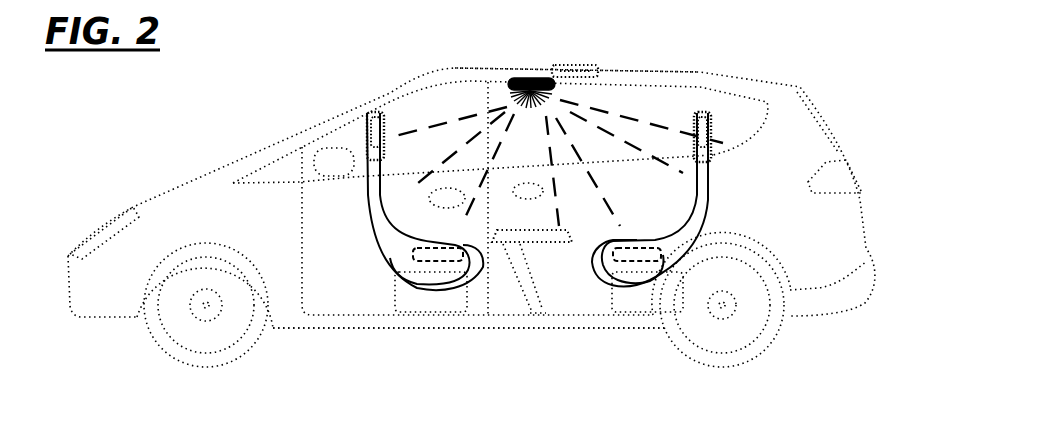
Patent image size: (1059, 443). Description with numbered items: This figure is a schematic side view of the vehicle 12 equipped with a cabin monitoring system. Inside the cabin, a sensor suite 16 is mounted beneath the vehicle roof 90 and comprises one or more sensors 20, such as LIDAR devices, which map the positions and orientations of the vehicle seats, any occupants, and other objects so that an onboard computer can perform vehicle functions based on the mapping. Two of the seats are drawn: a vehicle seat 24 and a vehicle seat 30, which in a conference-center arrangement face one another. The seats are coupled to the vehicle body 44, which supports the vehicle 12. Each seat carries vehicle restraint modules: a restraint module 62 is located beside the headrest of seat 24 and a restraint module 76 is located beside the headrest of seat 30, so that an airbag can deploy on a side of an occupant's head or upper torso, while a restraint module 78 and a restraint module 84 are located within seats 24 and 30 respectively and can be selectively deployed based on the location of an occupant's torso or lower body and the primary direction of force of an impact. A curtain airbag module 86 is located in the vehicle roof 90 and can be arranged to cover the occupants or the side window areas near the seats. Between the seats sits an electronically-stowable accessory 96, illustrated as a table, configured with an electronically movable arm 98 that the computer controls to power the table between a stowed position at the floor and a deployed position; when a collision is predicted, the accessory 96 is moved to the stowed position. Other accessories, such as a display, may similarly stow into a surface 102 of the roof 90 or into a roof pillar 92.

The vehicle 12 is at (153, 178).
The sensor suite 16 is at (509, 62).
The sensor 20 is at (508, 82).
The vehicle seat 24 is at (357, 208).
The vehicle seat 30 is at (722, 216).
The vehicle body 44 is at (447, 330).
The vehicle restraint module 62 is at (377, 112).
The vehicle restraint module 76 is at (706, 112).
The vehicle restraint module 78 is at (413, 249).
The vehicle restraint module 84 is at (663, 257).
The curtain airbag module 86 is at (583, 66).
The vehicle roof 90 is at (628, 75).
The roof pillar 92 is at (476, 99).
The electronically-stowable accessory 96 is at (508, 262).
The electronically movable arm 98 is at (512, 262).
The surface of the vehicle roof 102 is at (598, 80).